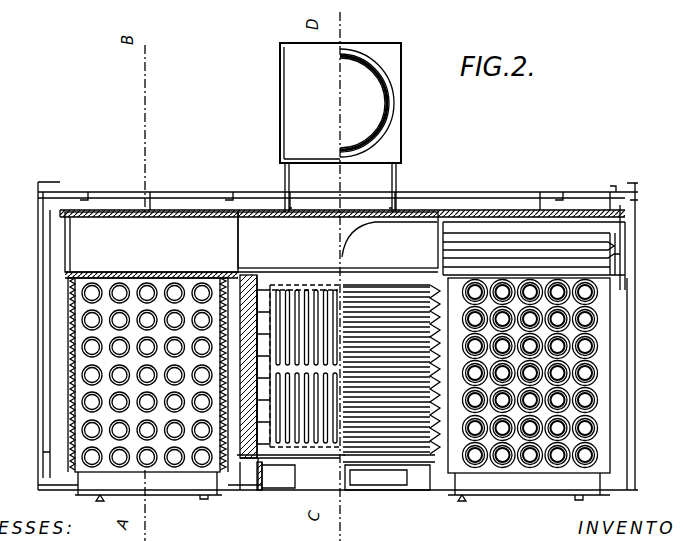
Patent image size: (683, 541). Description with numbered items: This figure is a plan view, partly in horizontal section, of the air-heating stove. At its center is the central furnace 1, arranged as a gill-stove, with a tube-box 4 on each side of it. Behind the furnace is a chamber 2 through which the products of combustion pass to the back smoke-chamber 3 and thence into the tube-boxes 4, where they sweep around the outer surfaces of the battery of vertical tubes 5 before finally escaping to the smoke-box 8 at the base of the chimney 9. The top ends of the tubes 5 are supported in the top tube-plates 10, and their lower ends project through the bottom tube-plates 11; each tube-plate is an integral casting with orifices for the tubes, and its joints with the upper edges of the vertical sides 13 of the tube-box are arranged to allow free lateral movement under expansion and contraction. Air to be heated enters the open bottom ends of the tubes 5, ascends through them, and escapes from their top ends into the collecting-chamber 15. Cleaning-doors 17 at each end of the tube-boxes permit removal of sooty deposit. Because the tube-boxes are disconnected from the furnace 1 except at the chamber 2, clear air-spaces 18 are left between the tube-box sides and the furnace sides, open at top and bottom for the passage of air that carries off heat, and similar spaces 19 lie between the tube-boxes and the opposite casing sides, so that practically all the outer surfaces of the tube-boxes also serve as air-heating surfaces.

The central furnace 1 is at (306, 355).
The chamber 2 is at (338, 242).
The back smoke-chamber 3 is at (151, 245).
The tube-box 4 is at (648, 324).
The vertical tube 5 is at (120, 462).
The smoke-box 8 is at (340, 103).
The chimney 9 is at (367, 103).
The top tube-plate 10 is at (655, 362).
The bottom tube-plate 11 is at (147, 423).
The vertical side of the tube-box 13 is at (337, 283).
The collecting-chamber 15 is at (286, 382).
The cleaning-door 17 is at (172, 497).
The air-space 18 is at (430, 268).
The space 19 is at (655, 400).